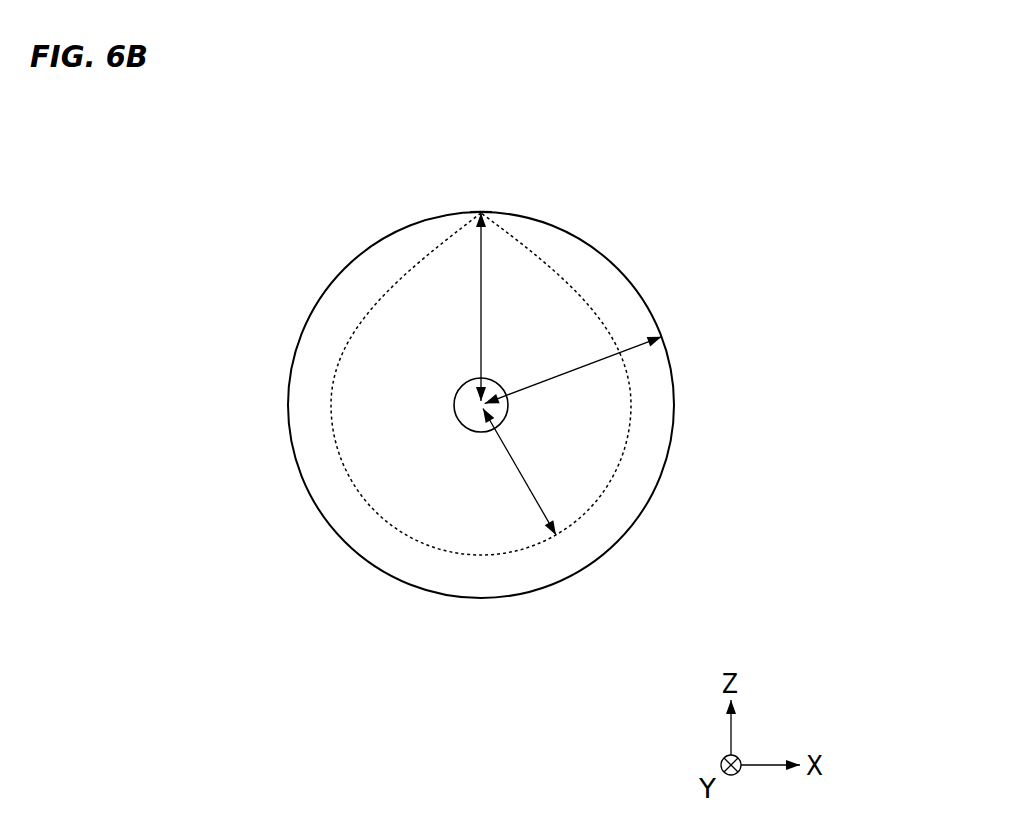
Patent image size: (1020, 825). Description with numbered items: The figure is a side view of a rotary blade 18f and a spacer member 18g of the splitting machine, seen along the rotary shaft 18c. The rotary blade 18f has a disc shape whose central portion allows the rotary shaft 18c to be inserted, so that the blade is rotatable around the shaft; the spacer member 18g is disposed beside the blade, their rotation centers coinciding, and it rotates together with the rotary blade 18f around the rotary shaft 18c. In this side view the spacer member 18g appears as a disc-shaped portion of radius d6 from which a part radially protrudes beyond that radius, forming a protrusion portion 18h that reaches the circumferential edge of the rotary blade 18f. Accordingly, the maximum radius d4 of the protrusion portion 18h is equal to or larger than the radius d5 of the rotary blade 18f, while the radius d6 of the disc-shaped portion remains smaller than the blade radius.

The rotary shaft 18c is at (467, 432).
The rotary blade 18f is at (635, 522).
The spacer member 18g is at (632, 403).
The protrusion portion 18h is at (484, 206).
The maximum radius of the protrusion portion d4 is at (498, 307).
The radius of the rotary blade d5 is at (573, 370).
The radius of the disc-shaped portion d6 is at (522, 472).